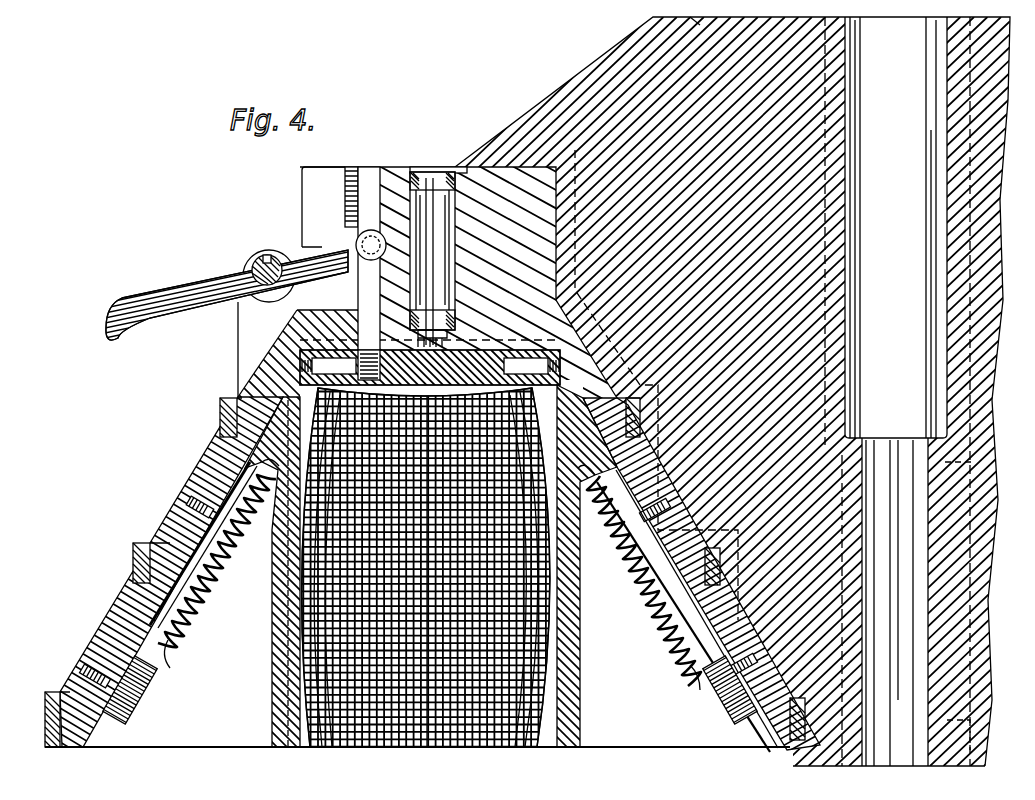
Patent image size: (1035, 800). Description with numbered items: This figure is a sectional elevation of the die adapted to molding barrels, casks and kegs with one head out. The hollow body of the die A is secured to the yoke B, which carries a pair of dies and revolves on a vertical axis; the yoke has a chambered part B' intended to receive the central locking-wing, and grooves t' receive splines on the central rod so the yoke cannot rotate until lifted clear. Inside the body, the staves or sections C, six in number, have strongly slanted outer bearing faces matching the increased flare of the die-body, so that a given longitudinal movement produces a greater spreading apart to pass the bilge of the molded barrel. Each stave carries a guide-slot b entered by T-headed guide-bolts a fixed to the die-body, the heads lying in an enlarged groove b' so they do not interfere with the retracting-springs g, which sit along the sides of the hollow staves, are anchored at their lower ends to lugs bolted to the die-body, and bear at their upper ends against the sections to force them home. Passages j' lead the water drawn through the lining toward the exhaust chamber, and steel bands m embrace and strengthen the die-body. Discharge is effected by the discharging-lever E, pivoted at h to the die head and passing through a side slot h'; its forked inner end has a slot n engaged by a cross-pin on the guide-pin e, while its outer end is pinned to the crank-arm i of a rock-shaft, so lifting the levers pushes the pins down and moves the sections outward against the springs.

The body of the die A is at (460, 280).
The yoke B is at (732, 391).
The chambered part of the yoke B' is at (896, 391).
The staves or sections C is at (515, 574).
The discharging-lever E is at (228, 295).
The T-headed guide-bolts a is at (192, 508).
The guide-slot b is at (464, 594).
The recess or enlarged groove b' is at (429, 602).
The guide-pins e is at (369, 273).
The retracting-springs g is at (432, 646).
The pivot of the discharging-lever h is at (264, 247).
The side slot h' is at (283, 276).
The crank-arm i is at (430, 693).
The passages j' is at (432, 251).
The steel bands m is at (35, 722).
The slots n is at (371, 245).
The grooves t' is at (904, 570).